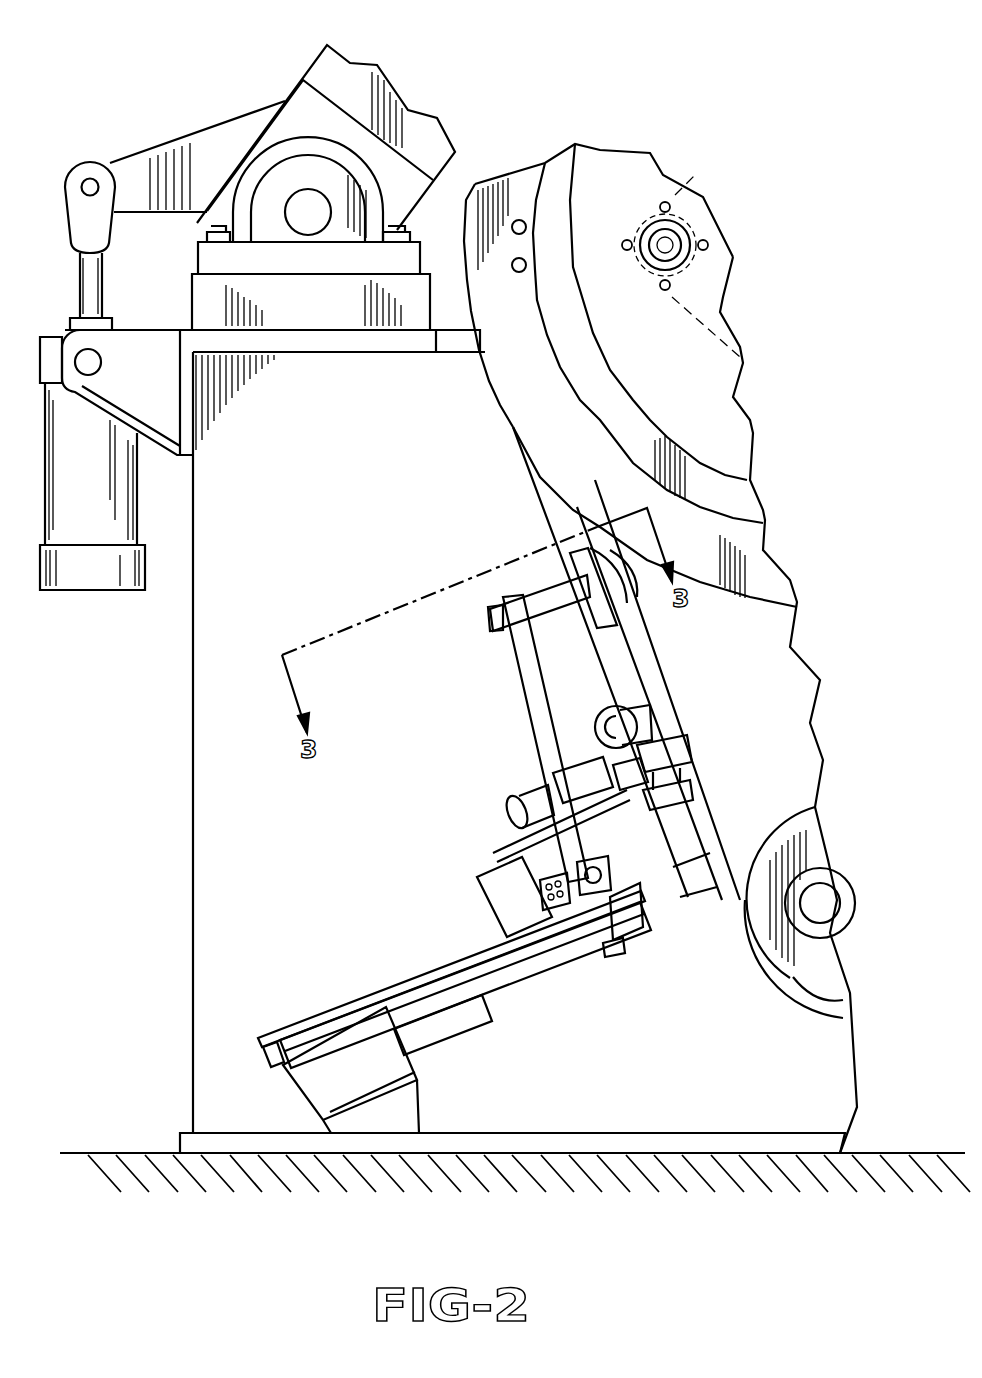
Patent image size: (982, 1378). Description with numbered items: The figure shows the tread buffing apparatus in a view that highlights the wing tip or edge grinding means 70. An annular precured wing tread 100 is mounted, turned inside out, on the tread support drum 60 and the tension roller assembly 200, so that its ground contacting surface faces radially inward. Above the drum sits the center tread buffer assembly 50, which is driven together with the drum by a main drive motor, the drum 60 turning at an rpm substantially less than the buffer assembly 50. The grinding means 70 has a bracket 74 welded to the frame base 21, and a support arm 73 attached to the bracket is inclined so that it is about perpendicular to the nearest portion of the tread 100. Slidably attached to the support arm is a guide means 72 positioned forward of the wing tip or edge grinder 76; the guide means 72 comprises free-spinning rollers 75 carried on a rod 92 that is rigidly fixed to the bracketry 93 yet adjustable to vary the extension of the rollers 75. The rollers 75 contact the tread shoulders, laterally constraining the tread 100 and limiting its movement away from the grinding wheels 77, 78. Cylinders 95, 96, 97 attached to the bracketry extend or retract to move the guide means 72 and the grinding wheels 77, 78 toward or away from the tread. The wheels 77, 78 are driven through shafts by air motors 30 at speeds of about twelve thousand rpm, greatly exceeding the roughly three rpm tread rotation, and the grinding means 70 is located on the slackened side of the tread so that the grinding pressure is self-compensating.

The frame base 21 is at (187, 1133).
The air motor 30 is at (683, 827).
The center tread buffer assembly 50 is at (299, 103).
The tread support drum 60 is at (619, 195).
The wing tip or edge grinding means 70 is at (449, 1003).
The guide means 72 is at (489, 639).
The support arm 73 is at (347, 1000).
The bracket 74 is at (393, 1062).
The rollers 75 is at (630, 605).
The wing tip or edge grinder 76 is at (672, 750).
The grinding wheel 77 is at (536, 730).
The grinding wheel 78 is at (590, 720).
The rod 92 is at (547, 608).
The bracketry 93 is at (525, 680).
The cylinder 95 is at (463, 1023).
The cylinder 96 is at (560, 910).
The cylinder 97 is at (517, 812).
The annular precured wing tread 100 is at (557, 513).
The tension roller assembly 200 is at (793, 960).